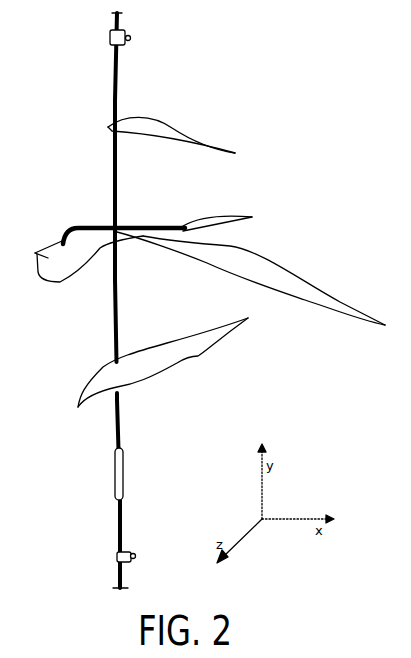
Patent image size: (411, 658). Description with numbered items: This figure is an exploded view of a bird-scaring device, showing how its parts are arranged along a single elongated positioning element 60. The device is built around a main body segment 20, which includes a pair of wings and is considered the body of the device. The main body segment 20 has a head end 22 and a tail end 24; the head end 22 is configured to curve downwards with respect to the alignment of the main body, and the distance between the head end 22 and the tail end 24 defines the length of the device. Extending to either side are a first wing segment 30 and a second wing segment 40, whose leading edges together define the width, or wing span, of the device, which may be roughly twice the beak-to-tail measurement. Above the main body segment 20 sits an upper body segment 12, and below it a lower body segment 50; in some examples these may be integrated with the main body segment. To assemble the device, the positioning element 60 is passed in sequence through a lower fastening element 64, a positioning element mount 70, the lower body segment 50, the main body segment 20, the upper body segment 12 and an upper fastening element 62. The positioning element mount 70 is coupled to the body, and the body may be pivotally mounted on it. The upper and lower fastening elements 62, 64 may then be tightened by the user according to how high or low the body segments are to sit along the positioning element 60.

The upper body segment 12 is at (127, 131).
The main body segment 20 is at (82, 201).
The head end 22 is at (62, 237).
The tail end 24 is at (231, 212).
The first wing segment 30 is at (35, 253).
The second wing segment 40 is at (317, 290).
The lower body segment 50 is at (153, 375).
The positioning element 60 is at (112, 321).
The upper fastening element 62 is at (130, 41).
The lower fastening element 64 is at (135, 563).
The positioning element mount 70 is at (124, 490).